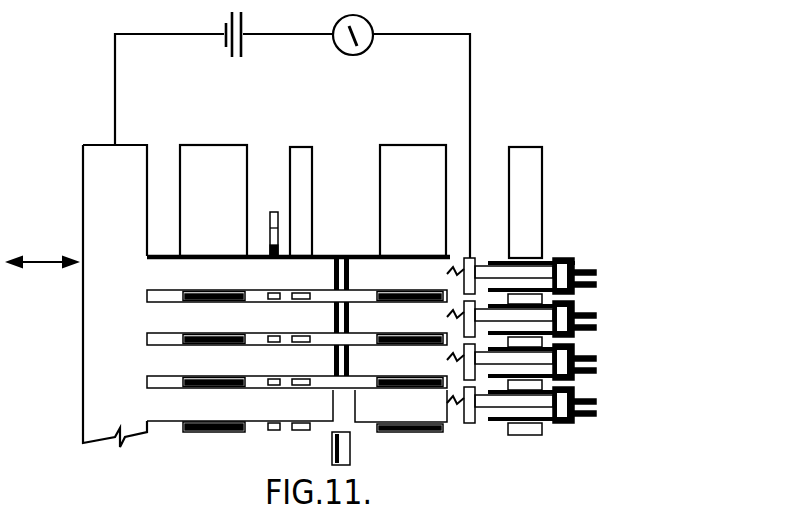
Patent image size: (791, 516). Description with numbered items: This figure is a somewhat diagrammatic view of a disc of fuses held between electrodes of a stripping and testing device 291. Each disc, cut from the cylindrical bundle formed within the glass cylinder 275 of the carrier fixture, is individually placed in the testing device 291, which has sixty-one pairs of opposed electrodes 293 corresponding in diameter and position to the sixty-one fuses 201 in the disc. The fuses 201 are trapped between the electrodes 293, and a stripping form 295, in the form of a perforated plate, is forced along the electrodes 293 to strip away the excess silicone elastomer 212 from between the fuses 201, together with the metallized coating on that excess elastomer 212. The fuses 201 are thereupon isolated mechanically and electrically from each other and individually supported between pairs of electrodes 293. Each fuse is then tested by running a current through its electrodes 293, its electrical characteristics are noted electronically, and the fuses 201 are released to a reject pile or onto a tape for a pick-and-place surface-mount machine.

The testing device 291 is at (525, 102).
The glass cylinder 275 is at (271, 214).
The stripping form 295 is at (302, 197).
The electrodes 293 is at (322, 256).
The fuses 201 is at (341, 258).
The elastomer 212 is at (278, 258).